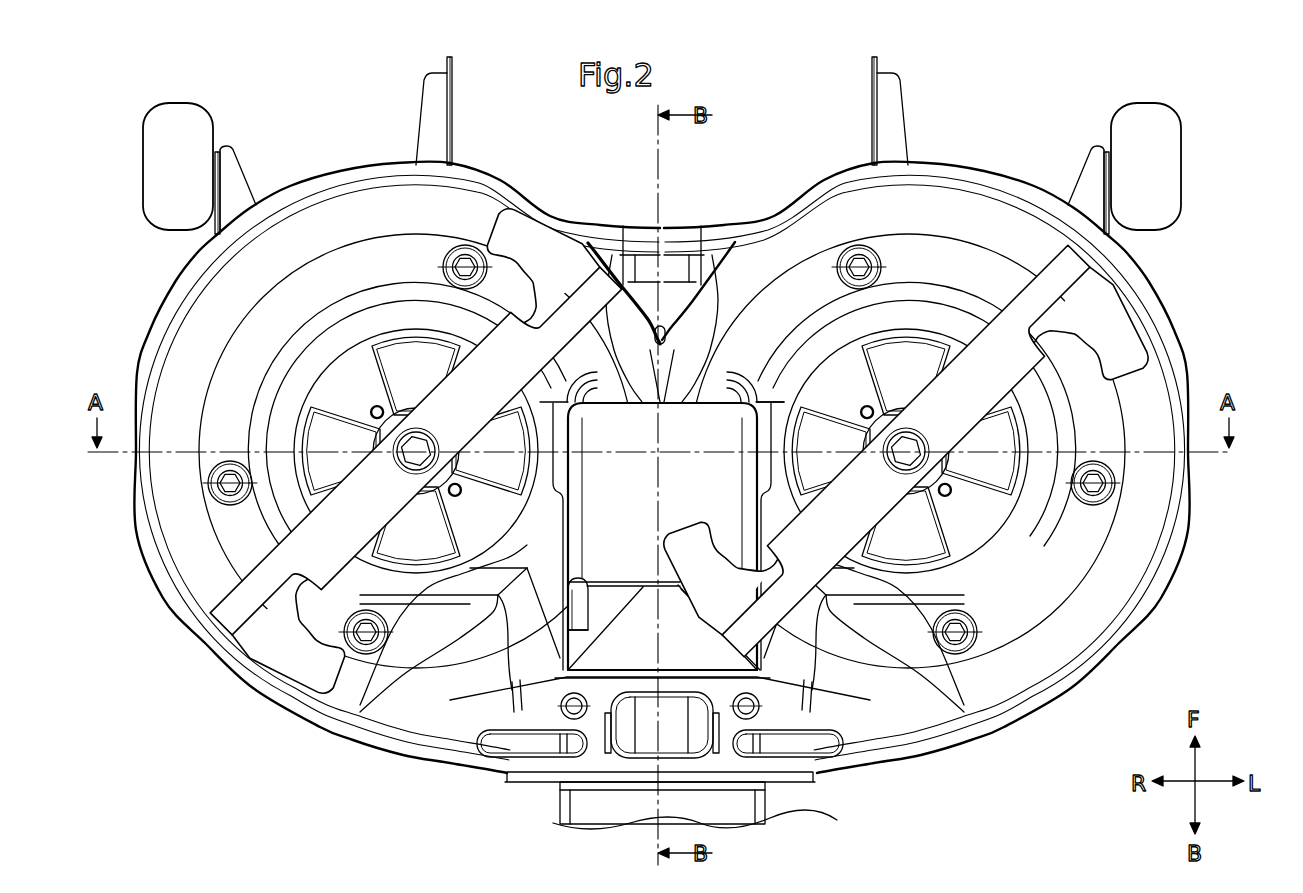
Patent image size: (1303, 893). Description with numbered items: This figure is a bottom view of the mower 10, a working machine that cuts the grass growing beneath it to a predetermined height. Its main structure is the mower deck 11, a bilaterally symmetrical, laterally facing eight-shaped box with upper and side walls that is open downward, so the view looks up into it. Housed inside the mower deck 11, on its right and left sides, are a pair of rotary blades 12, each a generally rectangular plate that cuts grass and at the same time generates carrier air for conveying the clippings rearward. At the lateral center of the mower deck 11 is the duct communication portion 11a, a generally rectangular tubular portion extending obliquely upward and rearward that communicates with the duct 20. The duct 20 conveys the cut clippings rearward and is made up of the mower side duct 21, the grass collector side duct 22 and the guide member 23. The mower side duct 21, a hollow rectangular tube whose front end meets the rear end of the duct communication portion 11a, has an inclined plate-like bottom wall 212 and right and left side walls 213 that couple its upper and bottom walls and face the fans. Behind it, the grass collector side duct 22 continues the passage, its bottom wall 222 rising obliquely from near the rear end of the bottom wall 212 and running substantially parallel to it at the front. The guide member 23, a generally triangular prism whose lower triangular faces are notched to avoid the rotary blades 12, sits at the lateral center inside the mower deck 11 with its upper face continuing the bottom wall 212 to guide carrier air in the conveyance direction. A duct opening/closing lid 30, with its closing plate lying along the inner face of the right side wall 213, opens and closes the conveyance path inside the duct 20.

The mower 10 is at (306, 168).
The mower deck 11 is at (363, 163).
The rotary blade 12 is at (527, 228).
The mower side duct 21 is at (645, 258).
The duct communication portion 11a is at (571, 440).
The side wall 213 is at (573, 514).
The grass collector side duct 22 is at (625, 574).
The bottom wall 212 is at (385, 690).
The duct opening/closing lid 30 is at (480, 592).
The bottom wall 222 is at (578, 584).
The guide member 23 is at (635, 645).
The duct 20 is at (772, 803).